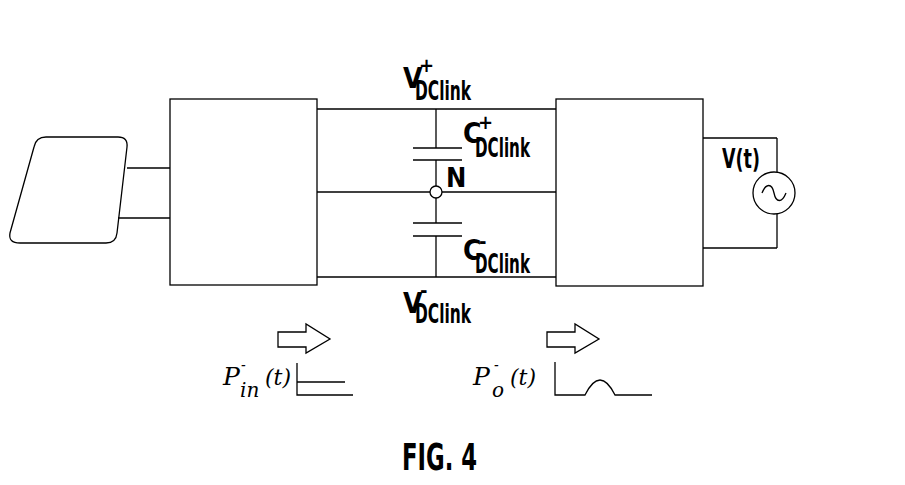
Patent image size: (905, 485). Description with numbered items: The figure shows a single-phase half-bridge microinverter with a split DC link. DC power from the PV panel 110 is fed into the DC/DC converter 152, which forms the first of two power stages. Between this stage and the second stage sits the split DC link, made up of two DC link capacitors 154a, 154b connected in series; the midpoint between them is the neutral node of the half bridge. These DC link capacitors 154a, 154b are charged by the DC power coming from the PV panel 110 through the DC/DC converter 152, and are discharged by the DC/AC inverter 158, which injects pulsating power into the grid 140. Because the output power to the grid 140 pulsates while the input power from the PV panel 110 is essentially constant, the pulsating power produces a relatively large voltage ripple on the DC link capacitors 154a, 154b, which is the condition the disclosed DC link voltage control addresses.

The PV panel 110 is at (30, 243).
The DC/DC converter 152 is at (212, 98).
The DC link capacitor 154a is at (425, 147).
The DC link capacitor 154b is at (445, 222).
The DC/AC inverter 158 is at (688, 98).
The grid 140 is at (790, 178).